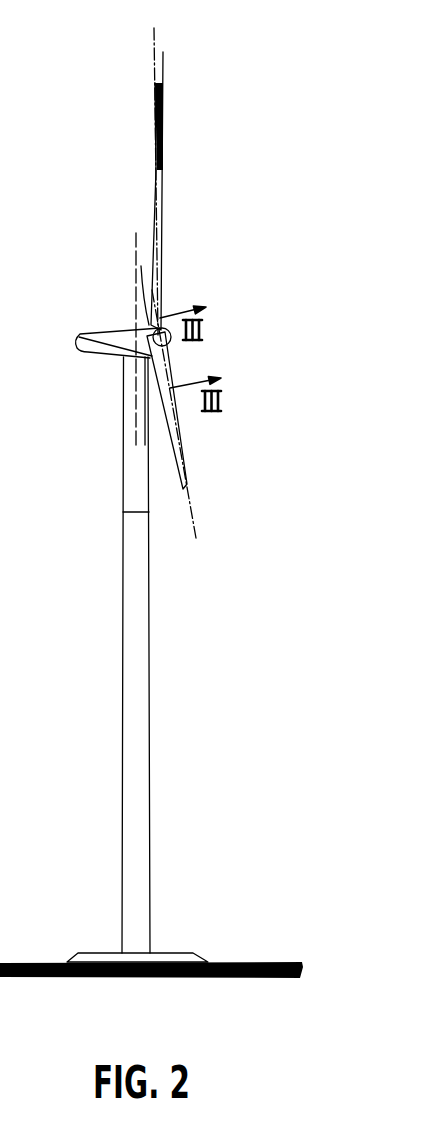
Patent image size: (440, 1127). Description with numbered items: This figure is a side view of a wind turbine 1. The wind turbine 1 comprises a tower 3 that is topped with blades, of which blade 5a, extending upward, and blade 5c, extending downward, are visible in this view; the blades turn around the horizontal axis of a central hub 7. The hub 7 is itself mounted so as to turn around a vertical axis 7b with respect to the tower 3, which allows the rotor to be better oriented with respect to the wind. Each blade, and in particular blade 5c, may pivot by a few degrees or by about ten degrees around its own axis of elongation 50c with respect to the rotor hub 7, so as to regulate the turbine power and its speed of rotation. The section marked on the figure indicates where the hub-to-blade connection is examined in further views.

The wind turbine 1 is at (151, 503).
The tower 3 is at (138, 827).
The blade 5a is at (155, 170).
The blade 5c is at (178, 433).
The central hub 7 is at (172, 338).
The vertical axis 7b is at (135, 280).
The axis of elongation 50c is at (197, 527).